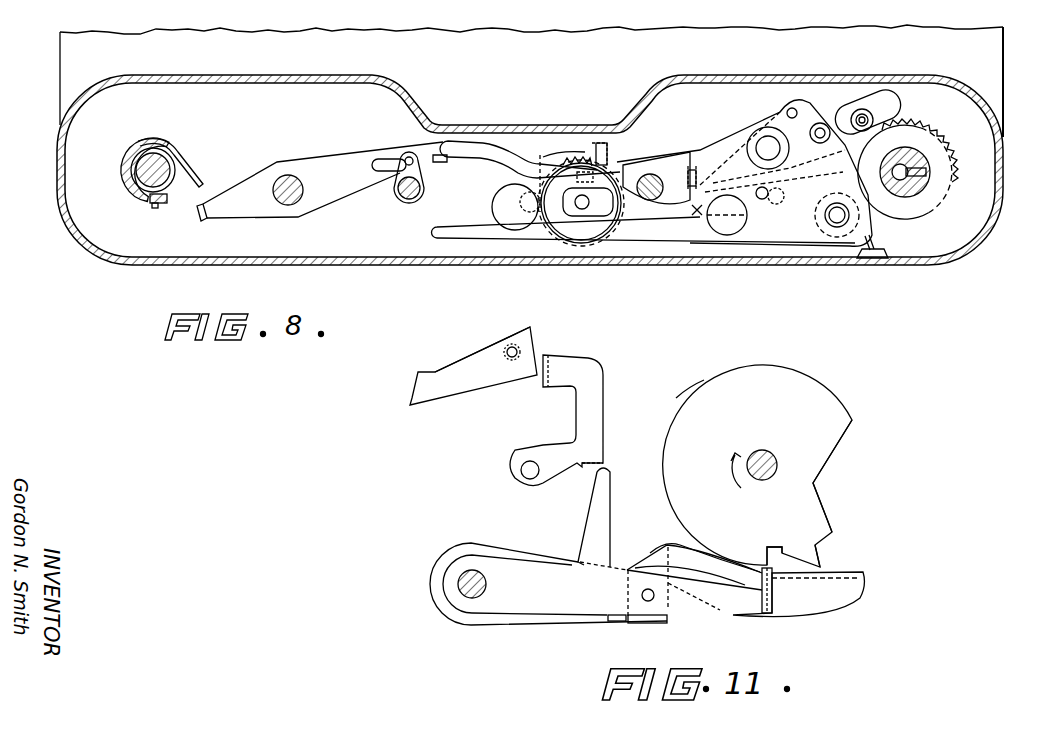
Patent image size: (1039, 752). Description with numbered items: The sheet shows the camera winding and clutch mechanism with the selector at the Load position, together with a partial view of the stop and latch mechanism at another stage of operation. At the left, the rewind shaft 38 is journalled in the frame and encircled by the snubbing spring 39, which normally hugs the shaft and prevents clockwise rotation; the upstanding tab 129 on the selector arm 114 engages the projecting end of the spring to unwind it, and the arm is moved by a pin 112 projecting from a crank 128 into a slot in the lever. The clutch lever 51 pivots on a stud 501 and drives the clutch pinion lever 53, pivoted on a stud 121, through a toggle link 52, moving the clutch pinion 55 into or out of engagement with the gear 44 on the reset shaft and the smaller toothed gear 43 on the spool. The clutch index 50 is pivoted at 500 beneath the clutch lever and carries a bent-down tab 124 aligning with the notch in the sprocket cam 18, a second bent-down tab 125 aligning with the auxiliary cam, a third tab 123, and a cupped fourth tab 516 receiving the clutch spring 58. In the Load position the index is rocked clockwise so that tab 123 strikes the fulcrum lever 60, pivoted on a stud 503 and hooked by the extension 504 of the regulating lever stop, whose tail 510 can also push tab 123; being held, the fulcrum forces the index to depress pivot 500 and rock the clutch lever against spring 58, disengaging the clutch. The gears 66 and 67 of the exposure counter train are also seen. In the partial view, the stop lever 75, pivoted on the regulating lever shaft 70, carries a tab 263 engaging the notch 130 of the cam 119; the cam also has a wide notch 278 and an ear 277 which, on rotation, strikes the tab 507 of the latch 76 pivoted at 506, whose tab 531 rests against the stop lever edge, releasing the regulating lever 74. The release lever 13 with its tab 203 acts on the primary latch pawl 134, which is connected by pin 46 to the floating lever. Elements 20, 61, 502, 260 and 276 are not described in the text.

In FIG. 8, the rewind shaft 38 is at (138, 176).
In FIG. 8, the snubbing spring 39 is at (192, 171).
In FIG. 8, the selector arm 114 is at (338, 160).
In FIG. 8, the upstanding tab 129 is at (197, 213).
In FIG. 8, the pin 112 is at (421, 145).
In FIG. 8, the crank 128 is at (402, 200).
In FIG. 8, the clutch index 50 is at (470, 154).
In FIG. 8, the roller 20 is at (505, 190).
In FIG. 8, the sprocket cam 18 is at (498, 206).
In FIG. 8, the clutch lever 51 is at (471, 234).
In FIG. 8, the bent-down tab 124 is at (548, 149).
In FIG. 8, the gear 66 is at (576, 156).
In FIG. 8, the second bent-down tab 125 is at (596, 146).
In FIG. 8, the extension 504 is at (608, 147).
In FIG. 8, the gear 67 is at (579, 176).
In FIG. 8, the pivot pin 61 is at (656, 178).
In FIG. 8, the third tab 123 is at (700, 172).
In FIG. 8, the fulcrum lever 60 is at (728, 166).
In FIG. 8, the stud 121 is at (760, 150).
In FIG. 8, the toggle link 52 is at (785, 105).
In FIG. 8, the clutch pinion 55 is at (845, 115).
In FIG. 8, the clutch pinion lever 53 is at (888, 110).
In FIG. 8, the gear 44 is at (924, 132).
In FIG. 8, the toothed gear 43 is at (950, 155).
In FIG. 8, the pivot 500 is at (745, 213).
In FIG. 8, the pivot stud 503 is at (782, 198).
In FIG. 8, the extension 510 is at (697, 216).
In FIG. 8, the fourth tab 516 is at (848, 212).
In FIG. 8, the stud 501 is at (828, 222).
In FIG. 8, the clutch spring 58 is at (874, 244).
In FIG. 8, the foot 502 is at (889, 255).
In FIG. 11, the pin 46 is at (508, 355).
In FIG. 11, the primary latch pawl 134 is at (482, 380).
In FIG. 11, the primary latch pawl release lever 13 is at (600, 396).
In FIG. 11, the tab 203 is at (606, 457).
In FIG. 11, the post 260 is at (594, 532).
In FIG. 11, the stop lever 75 is at (532, 612).
In FIG. 11, the regulating lever shaft 70 is at (486, 589).
In FIG. 11, the tab 531 is at (617, 622).
In FIG. 11, the latch 76 is at (640, 624).
In FIG. 11, the pivot 506 is at (654, 598).
In FIG. 11, the tab 507 is at (672, 566).
In FIG. 11, the stop lever tab 263 is at (762, 585).
In FIG. 11, the regulating lever 74 is at (845, 608).
In FIG. 11, the cam 119 is at (836, 418).
In FIG. 11, the cam periphery 276 is at (696, 392).
In FIG. 11, the wide notch 278 is at (818, 483).
In FIG. 11, the ear 277 is at (824, 565).
In FIG. 11, the notch 130 is at (776, 546).